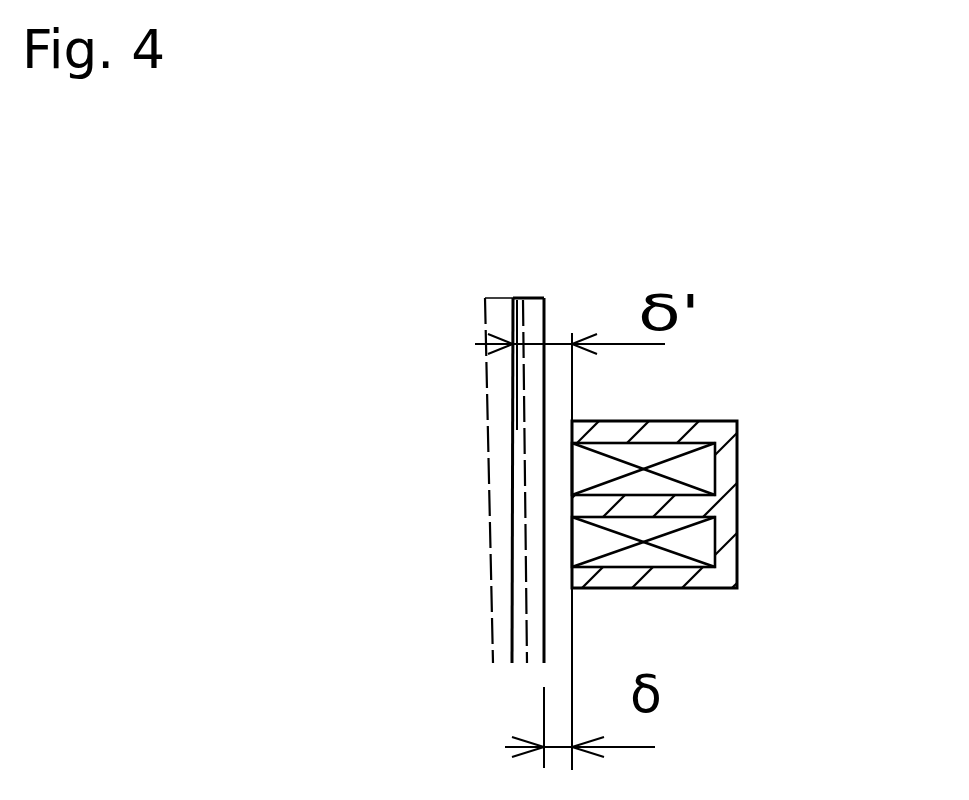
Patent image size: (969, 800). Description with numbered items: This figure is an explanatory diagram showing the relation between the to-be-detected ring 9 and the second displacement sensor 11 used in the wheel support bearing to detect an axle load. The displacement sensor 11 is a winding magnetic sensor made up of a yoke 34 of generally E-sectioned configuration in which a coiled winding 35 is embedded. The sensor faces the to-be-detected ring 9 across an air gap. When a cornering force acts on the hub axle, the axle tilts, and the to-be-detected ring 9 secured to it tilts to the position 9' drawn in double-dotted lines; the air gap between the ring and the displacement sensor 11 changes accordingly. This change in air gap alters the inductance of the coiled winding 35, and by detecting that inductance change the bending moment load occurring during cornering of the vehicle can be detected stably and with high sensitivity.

The to-be-detected ring 9 is at (556, 441).
The tilted position of the to-be-detected ring 9' is at (463, 446).
The second displacement sensor 11 is at (670, 502).
The yoke 34 is at (683, 588).
The coiled winding 35 is at (697, 539).